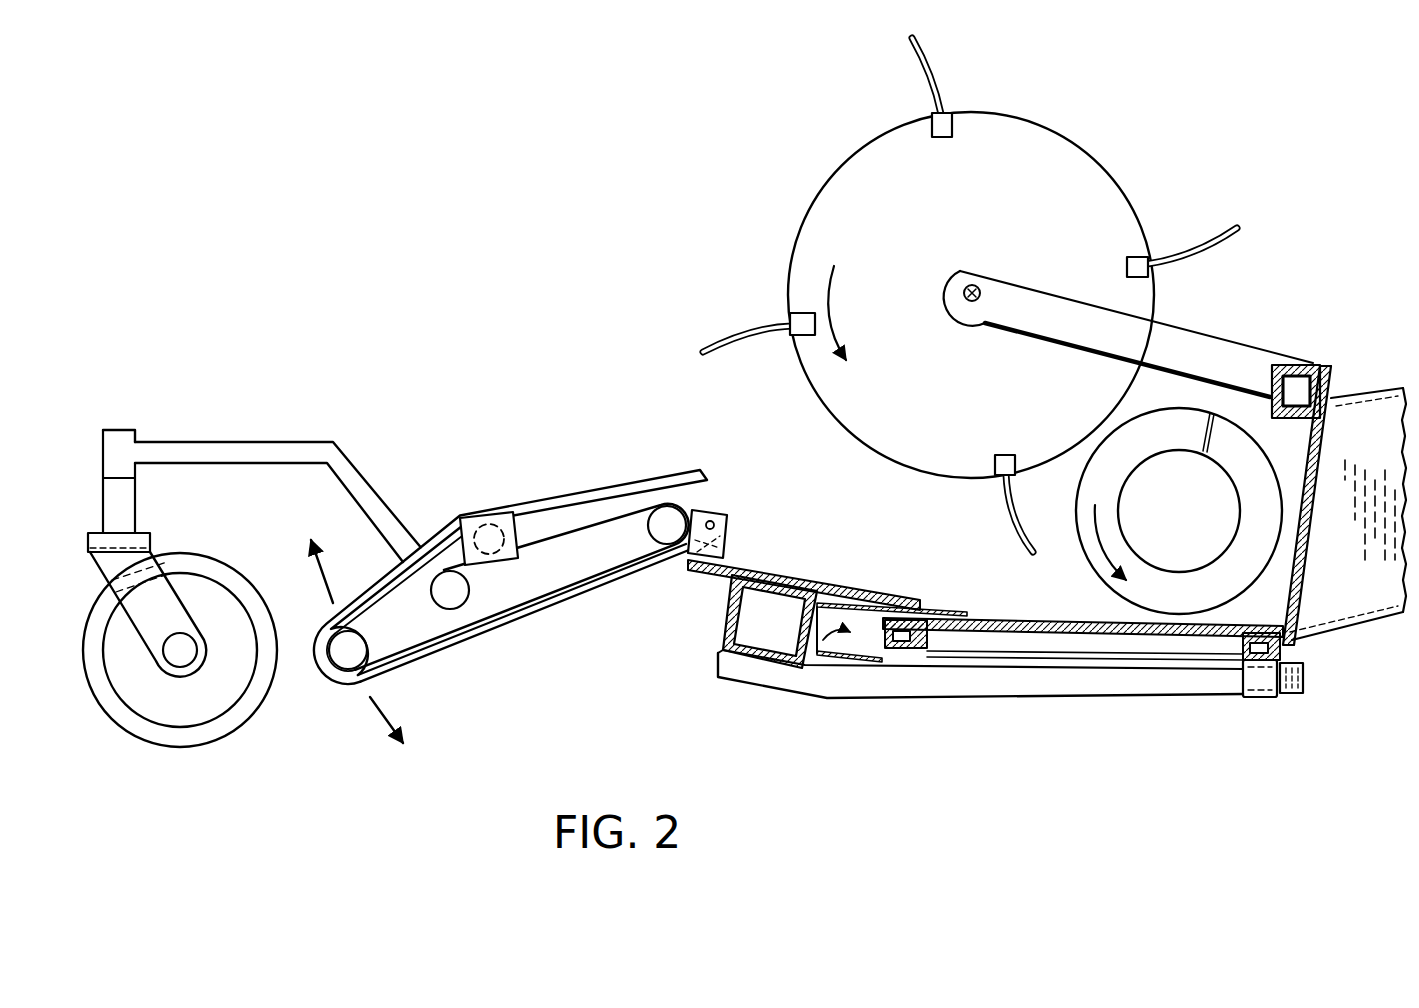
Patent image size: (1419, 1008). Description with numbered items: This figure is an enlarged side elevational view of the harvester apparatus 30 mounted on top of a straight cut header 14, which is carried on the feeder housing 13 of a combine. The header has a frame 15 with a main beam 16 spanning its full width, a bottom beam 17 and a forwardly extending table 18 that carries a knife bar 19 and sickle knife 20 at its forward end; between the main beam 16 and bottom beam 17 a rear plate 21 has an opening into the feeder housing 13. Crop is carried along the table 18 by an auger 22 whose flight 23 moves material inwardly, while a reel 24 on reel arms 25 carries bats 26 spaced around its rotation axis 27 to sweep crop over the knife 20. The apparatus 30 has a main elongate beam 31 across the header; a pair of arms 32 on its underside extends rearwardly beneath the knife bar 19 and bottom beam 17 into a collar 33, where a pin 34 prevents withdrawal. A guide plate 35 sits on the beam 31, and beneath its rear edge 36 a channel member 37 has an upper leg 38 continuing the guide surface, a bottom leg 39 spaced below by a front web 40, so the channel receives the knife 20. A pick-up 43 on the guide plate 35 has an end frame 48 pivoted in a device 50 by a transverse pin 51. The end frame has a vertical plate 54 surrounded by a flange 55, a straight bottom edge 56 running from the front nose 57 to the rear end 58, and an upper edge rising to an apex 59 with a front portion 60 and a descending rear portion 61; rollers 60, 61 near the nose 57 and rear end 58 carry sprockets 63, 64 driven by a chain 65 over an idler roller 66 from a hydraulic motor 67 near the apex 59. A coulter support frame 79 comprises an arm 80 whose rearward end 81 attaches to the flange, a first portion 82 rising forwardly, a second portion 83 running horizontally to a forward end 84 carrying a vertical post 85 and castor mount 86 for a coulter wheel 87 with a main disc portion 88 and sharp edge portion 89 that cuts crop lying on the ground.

The feeder housing 13 is at (1366, 398).
The straight cut header 14 is at (1268, 282).
The frame 15 is at (1274, 712).
The main beam 16 is at (1290, 364).
The bottom beam 17 is at (1226, 680).
The table 18 is at (1094, 614).
The knife bar 19 is at (927, 642).
The sickle knife 20 is at (792, 628).
The rear plate 21 is at (1318, 500).
The auger 22 is at (1270, 578).
The flight 23 is at (1248, 478).
The reel 24 is at (1058, 106).
The reel arms 25 is at (1057, 292).
The bats 26 is at (941, 140).
The rotation axis 27 is at (962, 289).
The harvester apparatus 30 is at (583, 420).
The main elongate beam 31 is at (722, 633).
The arms 32 is at (1060, 688).
The collar 33 is at (1246, 700).
The pin 34 is at (1294, 690).
The guide plate 35 is at (782, 567).
The rear edge 36 is at (916, 598).
The channel member 37 is at (939, 596).
The upper leg 38 is at (985, 608).
The bottom leg 39 is at (830, 668).
The front web 40 is at (775, 668).
The pick-up 43 is at (478, 462).
The end frame 48 is at (592, 485).
The device 50 is at (731, 548).
The transverse pin 51 is at (723, 518).
The vertical plate 54 is at (440, 620).
The flange 55 is at (510, 627).
The straight bottom edge 56 is at (568, 605).
The front nose 57 is at (311, 673).
The rear end 58 is at (705, 468).
The apex 59 is at (456, 512).
The front portion 60 is at (391, 573).
The rear portion 61 is at (653, 467).
The sprocket 63 is at (362, 662).
The sprocket 64 is at (669, 548).
The chain 65 is at (600, 532).
The idler roller 66 is at (447, 592).
The hydraulic motor 67 is at (495, 512).
The coulter support frame 79 is at (256, 408).
The arm 80 is at (284, 447).
The rearward end 81 is at (388, 540).
The first portion 82 is at (351, 488).
The second portion 83 is at (241, 453).
The forward end 84 is at (141, 440).
The vertical post 85 is at (139, 498).
The castor mount 86 is at (155, 543).
The coulter wheel 87 is at (166, 730).
The main disc portion 88 is at (212, 604).
The sharp edge portion 89 is at (218, 744).